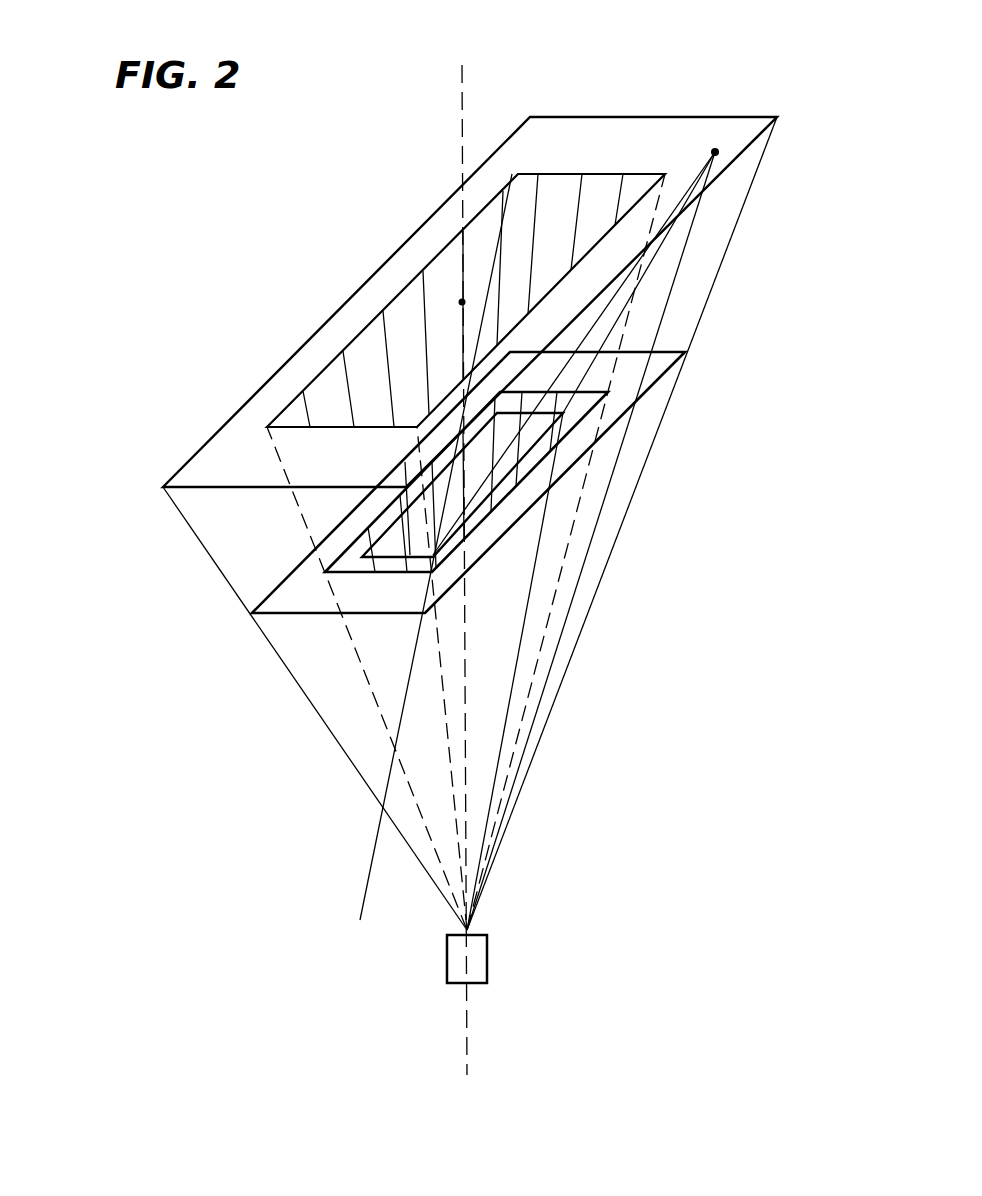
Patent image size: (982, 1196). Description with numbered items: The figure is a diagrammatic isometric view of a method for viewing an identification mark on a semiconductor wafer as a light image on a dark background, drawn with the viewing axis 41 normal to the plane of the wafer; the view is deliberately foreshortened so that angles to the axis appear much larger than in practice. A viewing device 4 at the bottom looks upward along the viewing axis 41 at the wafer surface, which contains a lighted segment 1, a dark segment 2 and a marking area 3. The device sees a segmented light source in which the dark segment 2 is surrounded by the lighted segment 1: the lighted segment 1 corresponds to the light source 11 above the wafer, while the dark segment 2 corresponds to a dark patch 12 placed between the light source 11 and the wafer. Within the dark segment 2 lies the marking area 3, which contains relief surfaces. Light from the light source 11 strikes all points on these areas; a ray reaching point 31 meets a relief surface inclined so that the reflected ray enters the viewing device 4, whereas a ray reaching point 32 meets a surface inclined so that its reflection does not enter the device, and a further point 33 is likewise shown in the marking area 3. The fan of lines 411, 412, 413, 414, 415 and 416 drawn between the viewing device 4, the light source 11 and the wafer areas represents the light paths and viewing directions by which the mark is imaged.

The lighted segment 1 is at (470, 365).
The light source 11 is at (603, 153).
The dark patch 12 is at (547, 215).
The dark segment 2 is at (337, 562).
The marking area 3 is at (390, 553).
The relief surface point 31 is at (530, 440).
The relief surface point 32 is at (445, 493).
The sensor region feature 33 is at (557, 410).
The viewing device 4 is at (488, 958).
The viewing axis 41 is at (460, 130).
The view ray 411 is at (643, 257).
The view ray 412 is at (520, 665).
The projection line 413 is at (653, 270).
The view ray 414 is at (378, 806).
The projection line 415 is at (590, 312).
The view ray 416 is at (372, 880).